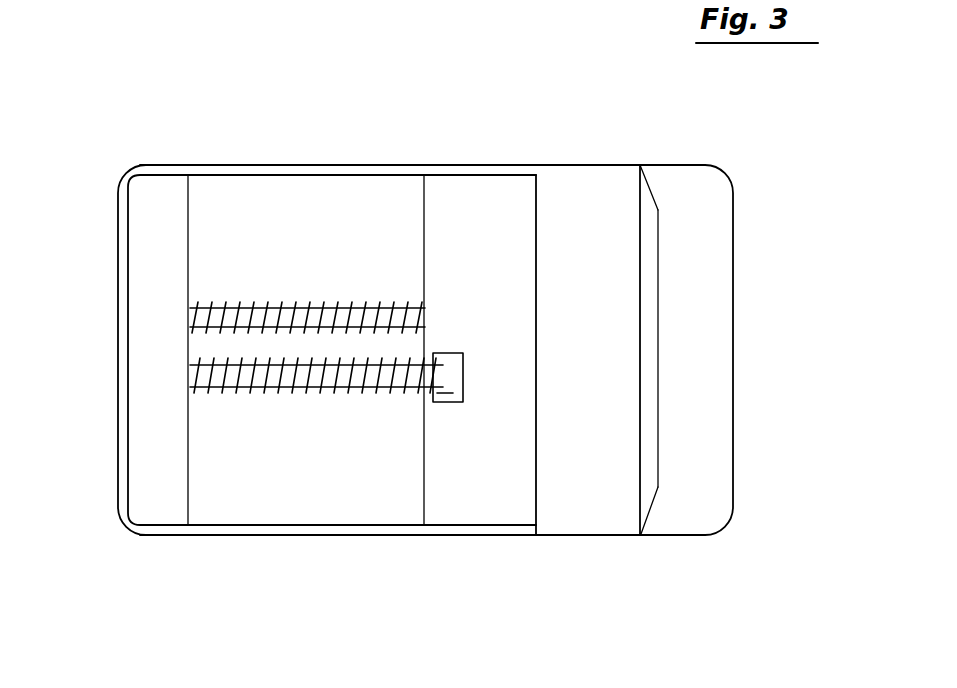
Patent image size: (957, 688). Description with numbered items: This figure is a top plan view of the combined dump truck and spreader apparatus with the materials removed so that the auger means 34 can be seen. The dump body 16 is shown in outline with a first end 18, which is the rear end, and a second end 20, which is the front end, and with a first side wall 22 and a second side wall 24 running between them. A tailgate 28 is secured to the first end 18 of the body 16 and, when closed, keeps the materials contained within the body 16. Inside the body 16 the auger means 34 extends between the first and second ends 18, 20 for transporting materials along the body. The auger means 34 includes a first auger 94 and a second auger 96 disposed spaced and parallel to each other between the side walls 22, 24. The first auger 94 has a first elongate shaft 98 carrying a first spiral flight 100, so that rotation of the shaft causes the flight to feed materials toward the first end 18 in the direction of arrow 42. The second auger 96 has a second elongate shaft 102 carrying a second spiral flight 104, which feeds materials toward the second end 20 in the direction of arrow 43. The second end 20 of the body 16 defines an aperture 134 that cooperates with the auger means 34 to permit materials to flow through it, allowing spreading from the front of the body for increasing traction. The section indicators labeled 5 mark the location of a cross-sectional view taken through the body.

The section line 5- 5 is at (228, 340).
The dump body 16 is at (373, 468).
The first end 18 is at (142, 475).
The second end 20 is at (493, 437).
The first side wall 22 is at (508, 532).
The second side wall 24 is at (403, 163).
The tailgate 28 is at (118, 430).
The auger means 34 is at (343, 201).
The arrow 42 is at (112, 323).
The arrow 43 is at (442, 392).
The first auger 94 is at (364, 197).
The second auger 96 is at (341, 498).
The first elongate shaft 98 is at (425, 310).
The first spiral flight 100 is at (367, 313).
The second elongate shaft 102 is at (395, 375).
The second spiral flight 104 is at (322, 377).
The aperture 134 is at (465, 382).